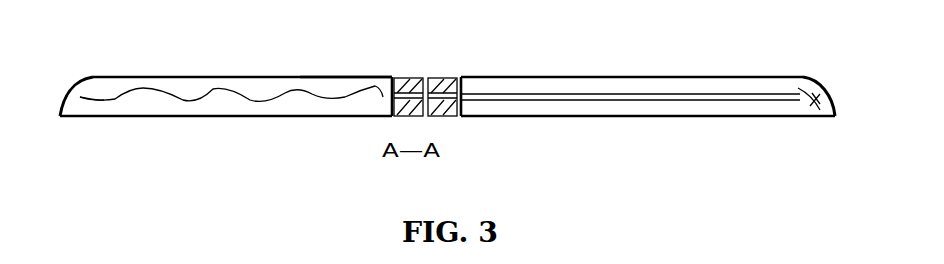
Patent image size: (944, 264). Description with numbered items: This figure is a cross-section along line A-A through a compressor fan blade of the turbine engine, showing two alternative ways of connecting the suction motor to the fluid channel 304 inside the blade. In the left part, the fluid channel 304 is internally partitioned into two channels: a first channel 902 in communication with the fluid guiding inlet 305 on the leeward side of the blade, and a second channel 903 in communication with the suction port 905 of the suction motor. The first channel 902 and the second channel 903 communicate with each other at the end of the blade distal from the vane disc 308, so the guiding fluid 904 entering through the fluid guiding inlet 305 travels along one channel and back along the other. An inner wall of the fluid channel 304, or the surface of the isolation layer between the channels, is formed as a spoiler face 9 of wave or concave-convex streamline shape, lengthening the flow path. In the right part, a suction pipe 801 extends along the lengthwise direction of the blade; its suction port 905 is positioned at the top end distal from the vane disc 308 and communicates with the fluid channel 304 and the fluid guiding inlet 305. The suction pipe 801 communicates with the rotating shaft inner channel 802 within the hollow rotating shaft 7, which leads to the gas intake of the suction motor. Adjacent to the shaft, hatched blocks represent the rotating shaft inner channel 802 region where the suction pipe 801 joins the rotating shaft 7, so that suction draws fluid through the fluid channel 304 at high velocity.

The spoiler face 9 is at (212, 92).
The lower-layer channel 903 is at (115, 100).
The guiding fluid 904 is at (85, 98).
The double-layered channel 902 is at (158, 88).
The fluid channel 304 is at (370, 97).
The fluid guiding inlet 305 is at (328, 77).
The rotating shaft inner channel 802 is at (422, 82).
The rotating shaft 7 is at (455, 115).
The vane disc 308 is at (465, 92).
The suction pipe 801 is at (592, 95).
The suction port 905 is at (392, 117).